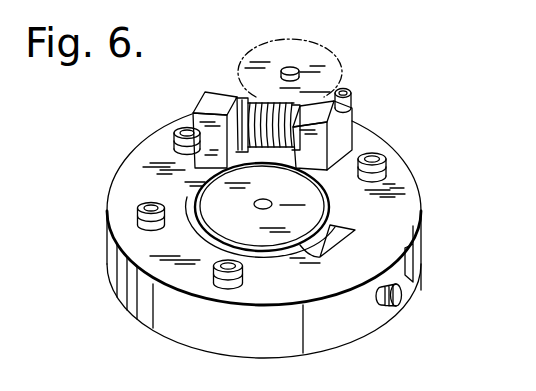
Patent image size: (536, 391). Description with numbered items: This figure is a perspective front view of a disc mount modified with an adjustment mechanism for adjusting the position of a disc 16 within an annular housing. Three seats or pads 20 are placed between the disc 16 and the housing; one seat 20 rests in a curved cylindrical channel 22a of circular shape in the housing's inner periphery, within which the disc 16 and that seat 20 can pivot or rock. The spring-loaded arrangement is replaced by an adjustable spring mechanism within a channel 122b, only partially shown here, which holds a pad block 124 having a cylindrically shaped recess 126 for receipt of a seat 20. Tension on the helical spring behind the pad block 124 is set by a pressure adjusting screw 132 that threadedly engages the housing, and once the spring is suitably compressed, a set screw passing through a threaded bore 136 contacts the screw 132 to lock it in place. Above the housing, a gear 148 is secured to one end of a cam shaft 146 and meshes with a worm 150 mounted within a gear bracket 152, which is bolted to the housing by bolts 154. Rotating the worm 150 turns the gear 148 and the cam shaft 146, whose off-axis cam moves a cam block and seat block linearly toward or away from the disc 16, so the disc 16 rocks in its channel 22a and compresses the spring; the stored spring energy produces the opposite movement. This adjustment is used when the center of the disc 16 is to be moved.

The disc 16 is at (262, 209).
The seats or pads 20 is at (186, 192).
The channel 22a is at (243, 236).
The channel 122b is at (350, 232).
The pad block 124 is at (343, 252).
The cylindrically shaped recess 126 is at (392, 207).
The pressure adjusting screw 132 is at (402, 298).
The threaded bore 136 is at (430, 259).
The cam shaft 146 is at (291, 67).
The gear 148 is at (324, 70).
The worm 150 is at (241, 100).
The gear bracket 152 is at (341, 147).
The bolts 154 is at (345, 100).